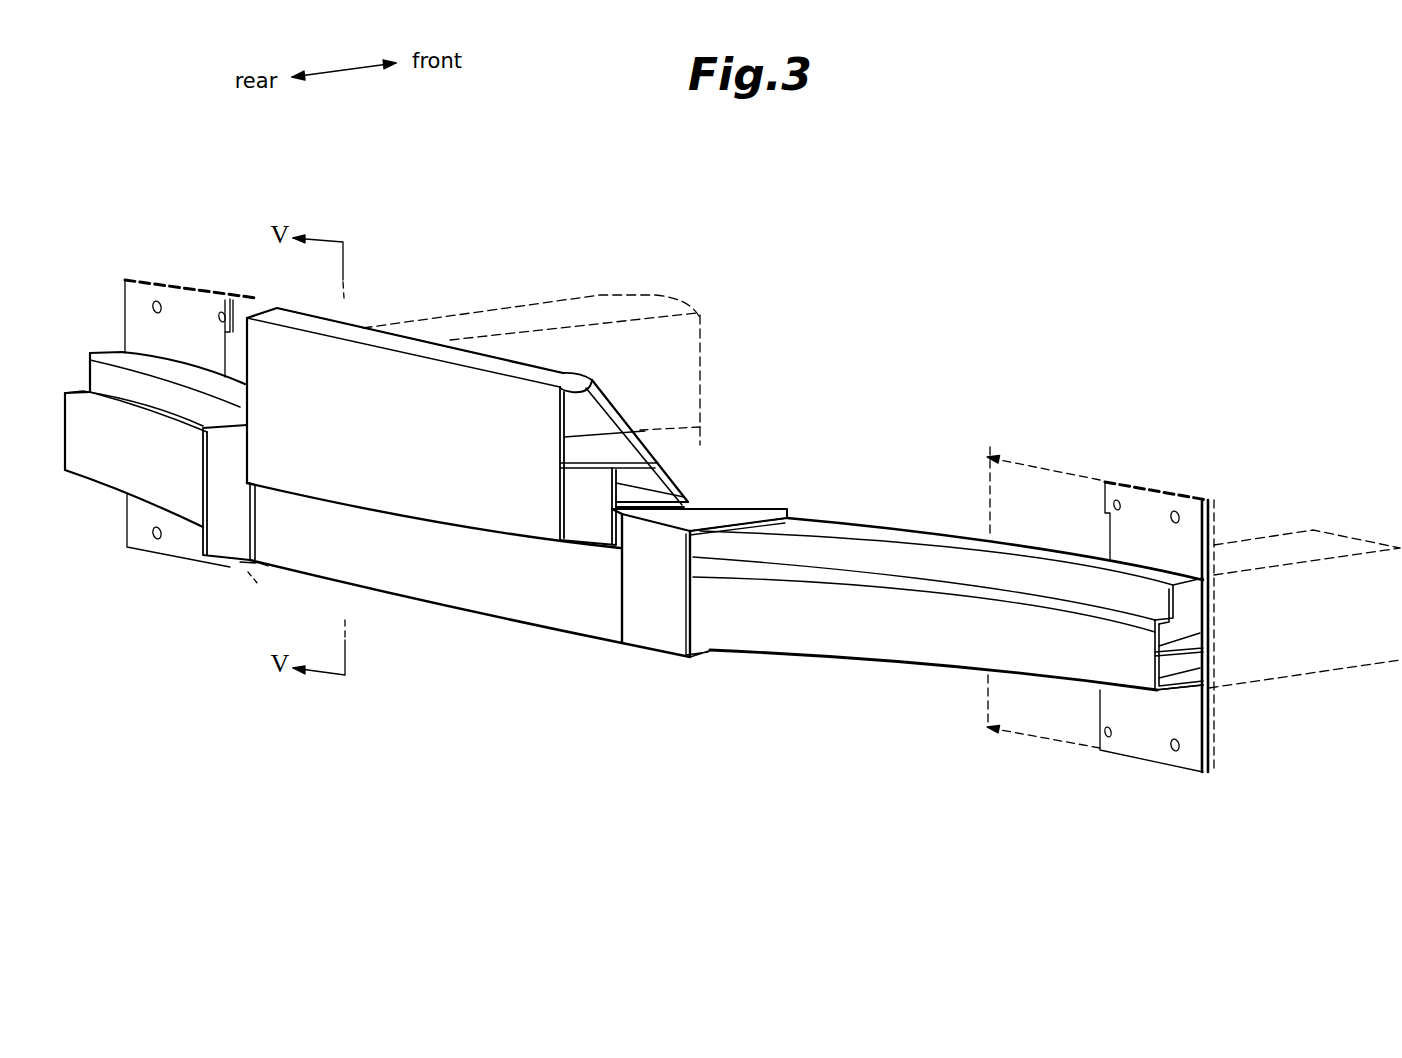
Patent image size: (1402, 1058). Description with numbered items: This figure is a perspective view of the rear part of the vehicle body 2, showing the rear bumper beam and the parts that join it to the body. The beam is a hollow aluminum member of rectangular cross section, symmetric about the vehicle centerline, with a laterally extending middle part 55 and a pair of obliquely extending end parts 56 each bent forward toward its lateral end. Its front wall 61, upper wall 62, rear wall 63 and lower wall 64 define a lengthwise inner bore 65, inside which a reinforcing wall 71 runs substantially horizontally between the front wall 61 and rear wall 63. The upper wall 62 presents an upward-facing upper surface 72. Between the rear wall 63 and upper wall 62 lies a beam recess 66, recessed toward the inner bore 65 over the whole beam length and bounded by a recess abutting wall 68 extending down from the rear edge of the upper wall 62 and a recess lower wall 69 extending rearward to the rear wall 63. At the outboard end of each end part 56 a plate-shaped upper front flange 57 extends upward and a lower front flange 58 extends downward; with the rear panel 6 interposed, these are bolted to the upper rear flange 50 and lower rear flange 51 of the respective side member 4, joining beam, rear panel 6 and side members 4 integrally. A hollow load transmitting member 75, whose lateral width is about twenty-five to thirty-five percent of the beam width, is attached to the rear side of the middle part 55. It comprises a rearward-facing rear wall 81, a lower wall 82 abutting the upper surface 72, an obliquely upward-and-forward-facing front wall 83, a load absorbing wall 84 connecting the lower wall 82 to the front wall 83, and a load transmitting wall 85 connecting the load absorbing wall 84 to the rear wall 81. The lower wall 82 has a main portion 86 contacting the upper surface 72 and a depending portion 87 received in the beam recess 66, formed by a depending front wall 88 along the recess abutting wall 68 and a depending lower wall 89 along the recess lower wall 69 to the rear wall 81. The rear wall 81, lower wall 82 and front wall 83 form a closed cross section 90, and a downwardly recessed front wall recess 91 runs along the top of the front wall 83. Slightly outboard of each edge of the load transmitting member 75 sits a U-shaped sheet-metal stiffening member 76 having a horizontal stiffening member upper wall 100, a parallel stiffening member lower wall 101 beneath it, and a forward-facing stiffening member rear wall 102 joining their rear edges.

The vehicle body 2 is at (362, 695).
The side member 4 is at (697, 338).
The rear panel 6 is at (1000, 480).
The upper rear flange 50 is at (1213, 520).
The lower rear flange 51 is at (1210, 753).
The middle part 55 is at (493, 600).
The end part 56 is at (103, 467).
The upper front flange 57 is at (137, 293).
The lower front flange 58 is at (182, 545).
The front wall 61 is at (773, 637).
The upper wall 62 is at (825, 530).
The rear wall 63 is at (898, 533).
The lower wall 64 is at (840, 658).
The inner bore 65 is at (1182, 627).
The beam recess 66 is at (1072, 577).
The recess abutting wall 68 is at (945, 558).
The recess lower wall 69 is at (1012, 592).
The reinforcing wall 71 is at (1185, 655).
The upper surface 72 is at (860, 533).
The load transmitting member 75 is at (373, 328).
The stiffening member 76 is at (222, 425).
The rear wall 81 is at (440, 508).
The lower wall 82 is at (588, 550).
The front wall 83 is at (636, 428).
The load absorbing wall 84 is at (636, 440).
The load transmitting wall 85 is at (583, 460).
The main portion 86 is at (655, 500).
The depending portion 87 is at (597, 547).
The depending front wall 88 is at (593, 493).
The depending lower wall 89 is at (580, 547).
The closed cross section 90 is at (573, 388).
The front wall recess 91 is at (420, 345).
The stiffening member upper wall 100 is at (718, 513).
The stiffening member lower wall 101 is at (705, 660).
The stiffening member rear wall 102 is at (673, 640).